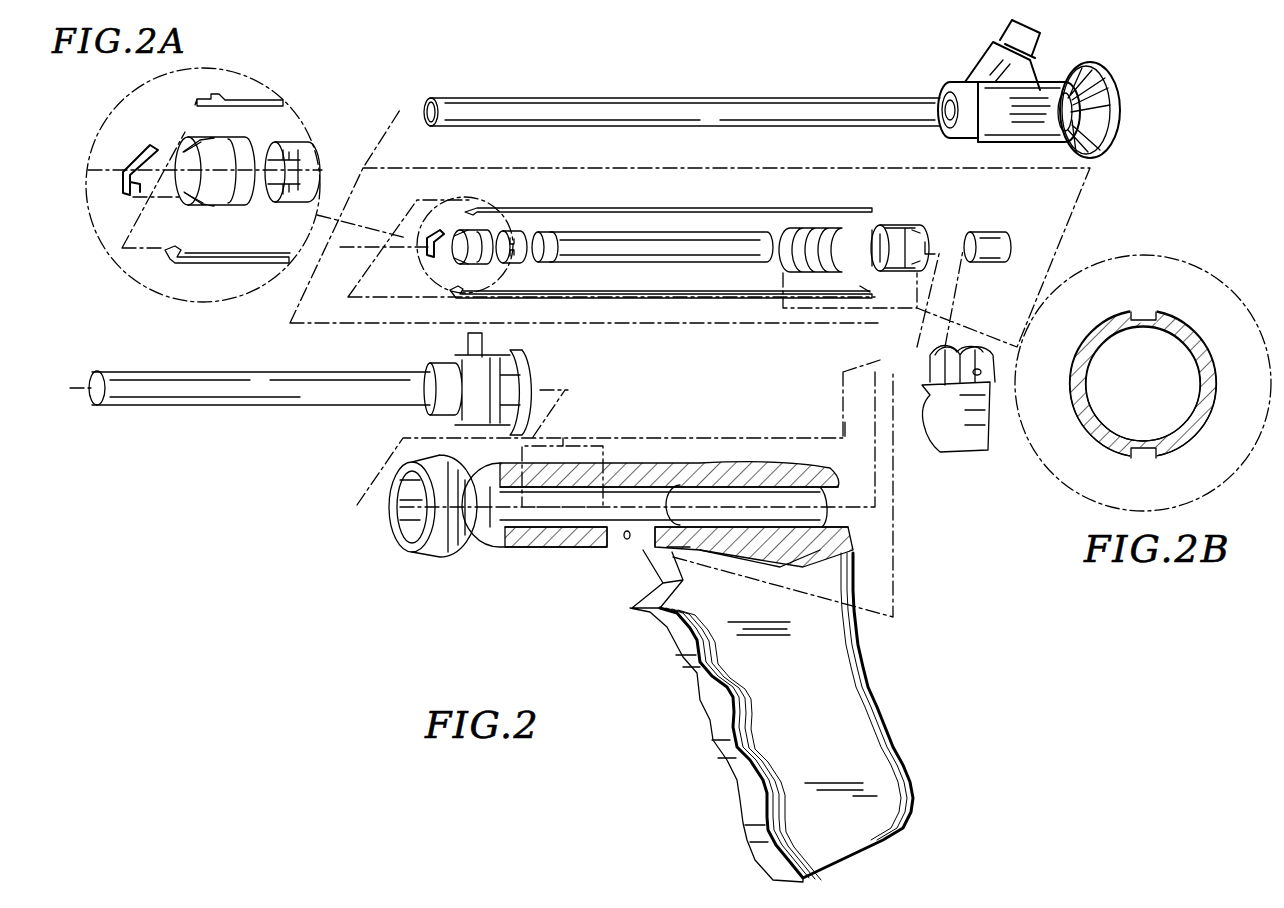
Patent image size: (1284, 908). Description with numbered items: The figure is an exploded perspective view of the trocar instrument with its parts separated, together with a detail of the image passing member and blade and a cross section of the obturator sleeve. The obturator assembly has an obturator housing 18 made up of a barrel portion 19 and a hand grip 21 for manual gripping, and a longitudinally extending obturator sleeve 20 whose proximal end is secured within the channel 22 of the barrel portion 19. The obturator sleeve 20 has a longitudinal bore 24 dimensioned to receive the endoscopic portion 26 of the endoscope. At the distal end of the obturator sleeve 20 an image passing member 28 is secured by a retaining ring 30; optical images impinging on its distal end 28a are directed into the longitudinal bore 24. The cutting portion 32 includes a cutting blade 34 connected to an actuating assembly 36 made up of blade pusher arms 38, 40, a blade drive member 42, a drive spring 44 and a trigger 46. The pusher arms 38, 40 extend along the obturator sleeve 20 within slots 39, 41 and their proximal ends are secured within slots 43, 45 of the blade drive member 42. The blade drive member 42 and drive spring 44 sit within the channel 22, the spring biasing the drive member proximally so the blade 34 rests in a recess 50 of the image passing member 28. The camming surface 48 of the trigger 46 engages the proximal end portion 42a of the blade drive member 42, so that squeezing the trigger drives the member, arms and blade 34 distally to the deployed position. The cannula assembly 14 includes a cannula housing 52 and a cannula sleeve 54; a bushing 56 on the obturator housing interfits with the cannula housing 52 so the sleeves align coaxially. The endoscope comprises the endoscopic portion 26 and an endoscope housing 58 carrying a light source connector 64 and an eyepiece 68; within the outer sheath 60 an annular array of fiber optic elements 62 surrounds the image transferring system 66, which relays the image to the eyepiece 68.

In FIG. 2, the cannula assembly 14 is at (334, 414).
In FIG. 2, the obturator housing 18 is at (664, 637).
In FIG. 2, the barrel portion 19 is at (691, 612).
In FIG. 2, the obturator sleeve 20 is at (733, 232).
In FIG. 2B, the obturator sleeve 20 is at (1072, 380).
In FIG. 2, the hand grip 21 is at (842, 675).
In FIG. 2, the channel 22 is at (556, 510).
In FIG. 2, the longitudinal bore 24 is at (546, 232).
In FIG. 2, the endoscopic portion 26 is at (782, 80).
In FIG. 2A, the image passing member 28 is at (200, 195).
In FIG. 2, the image passing member 28 is at (470, 264).
In FIG. 2, the distal end of image directing member 28a is at (458, 228).
In FIG. 2A, the retaining ring 30 is at (310, 152).
In FIG. 2, the retaining ring 30 is at (512, 232).
In FIG. 2, the cutting portion 32 is at (675, 192).
In FIG. 2A, the cutting blade 34 is at (124, 192).
In FIG. 2, the cutting blade 34 is at (428, 250).
In FIG. 2, the actuating assembly 36 is at (924, 220).
In FIG. 2A, the blade pusher arm 38 is at (236, 264).
In FIG. 2, the blade pusher arm 38 is at (612, 293).
In FIG. 2B, the slot 39 is at (1142, 310).
In FIG. 2A, the blade pusher arm 40 is at (252, 96).
In FIG. 2, the blade pusher arm 40 is at (608, 209).
In FIG. 2B, the slot 41 is at (1143, 458).
In FIG. 2, the blade drive member 42 is at (906, 226).
In FIG. 2, the proximal end portion 42a is at (935, 268).
In FIG. 2, the slot 43 is at (875, 226).
In FIG. 2, the drive spring 44 is at (788, 228).
In FIG. 2, the slot 45 is at (863, 298).
In FIG. 2, the trigger 46 is at (970, 442).
In FIG. 2, the camming surface 48 is at (930, 358).
In FIG. 2A, the recess 50 is at (195, 150).
In FIG. 2, the cannula housing 52 is at (533, 372).
In FIG. 2, the cannula sleeve 54 is at (197, 382).
In FIG. 2, the bushing 56 is at (408, 538).
In FIG. 2, the endoscope housing 58 is at (1045, 72).
In FIG. 2, the outer sheath 60 is at (646, 104).
In FIG. 2, the fiber optic elements 62 is at (431, 98).
In FIG. 2, the light source connector 64 is at (1008, 40).
In FIG. 2, the image transferring system 66 is at (428, 110).
In FIG. 2, the eyepiece 68 is at (1108, 86).